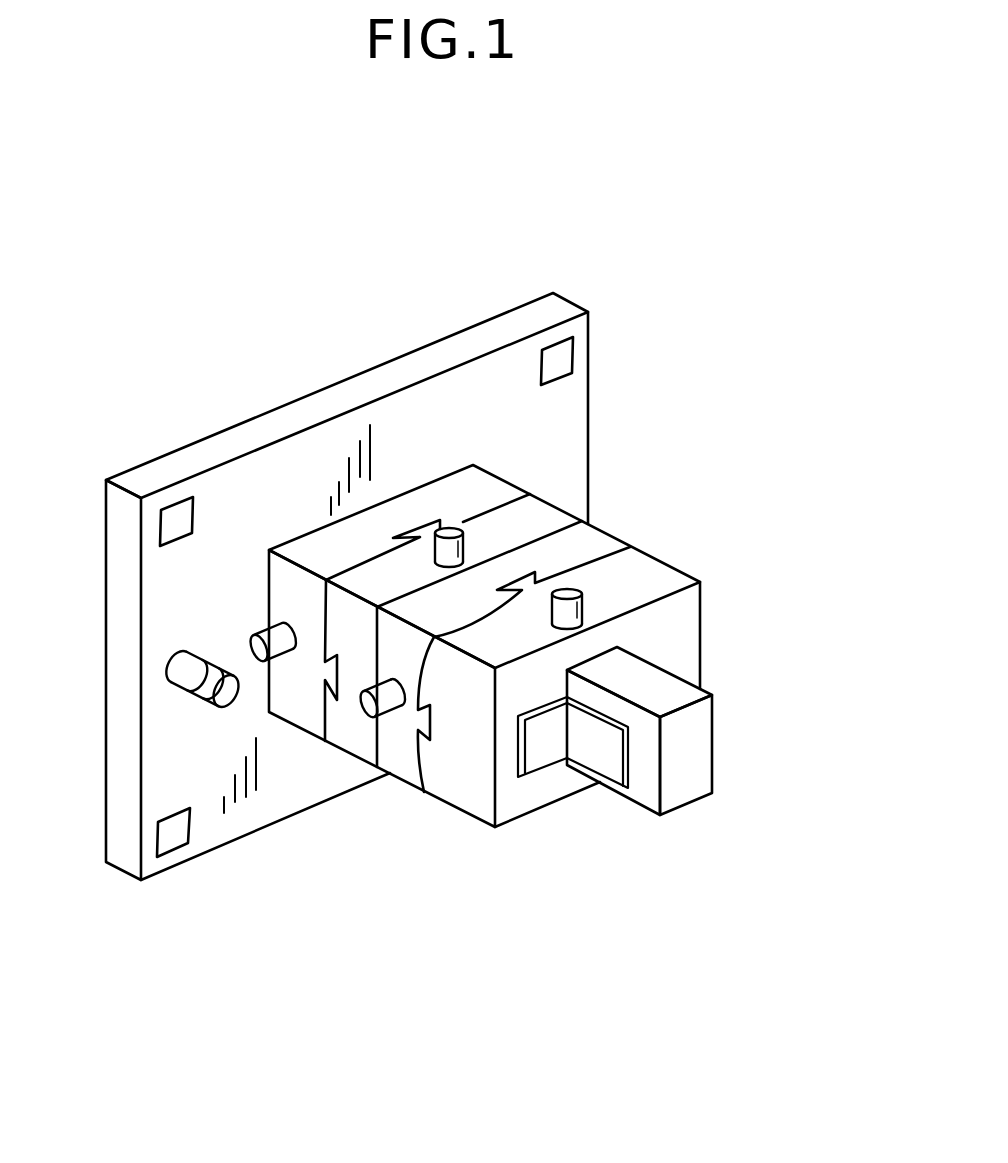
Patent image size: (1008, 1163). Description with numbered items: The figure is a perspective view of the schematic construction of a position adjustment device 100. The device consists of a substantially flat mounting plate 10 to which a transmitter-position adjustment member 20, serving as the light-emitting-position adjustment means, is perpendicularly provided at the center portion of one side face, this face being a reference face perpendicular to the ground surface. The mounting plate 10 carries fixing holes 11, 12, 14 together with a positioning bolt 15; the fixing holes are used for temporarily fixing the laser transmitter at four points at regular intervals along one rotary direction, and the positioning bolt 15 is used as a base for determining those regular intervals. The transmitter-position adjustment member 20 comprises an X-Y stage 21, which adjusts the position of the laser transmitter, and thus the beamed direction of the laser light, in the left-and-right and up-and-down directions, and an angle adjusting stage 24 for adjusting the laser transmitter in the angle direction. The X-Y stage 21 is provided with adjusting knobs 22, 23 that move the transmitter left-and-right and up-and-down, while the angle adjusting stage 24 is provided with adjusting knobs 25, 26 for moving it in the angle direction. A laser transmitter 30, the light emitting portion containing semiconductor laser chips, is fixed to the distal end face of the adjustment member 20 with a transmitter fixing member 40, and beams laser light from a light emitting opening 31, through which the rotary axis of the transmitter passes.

The position adjustment device 100 is at (807, 211).
The mounting plate 10 is at (473, 337).
The fixing hole 11 is at (177, 516).
The fixing hole 12 is at (172, 838).
The fixing hole 14 is at (563, 352).
The positioning bolt 15 is at (178, 680).
The transmitter-position adjustment member 20 is at (724, 464).
The X-Y stage 21 is at (546, 500).
The adjusting knob 22 is at (453, 530).
The adjusting knob 23 is at (254, 650).
The angle adjusting stage 24 is at (683, 570).
The adjusting knob 25 is at (568, 591).
The adjusting knob 26 is at (398, 708).
The laser transmitter 30 is at (678, 771).
The light emitting opening 31 is at (691, 734).
The transmitter fixing member 40 is at (605, 765).